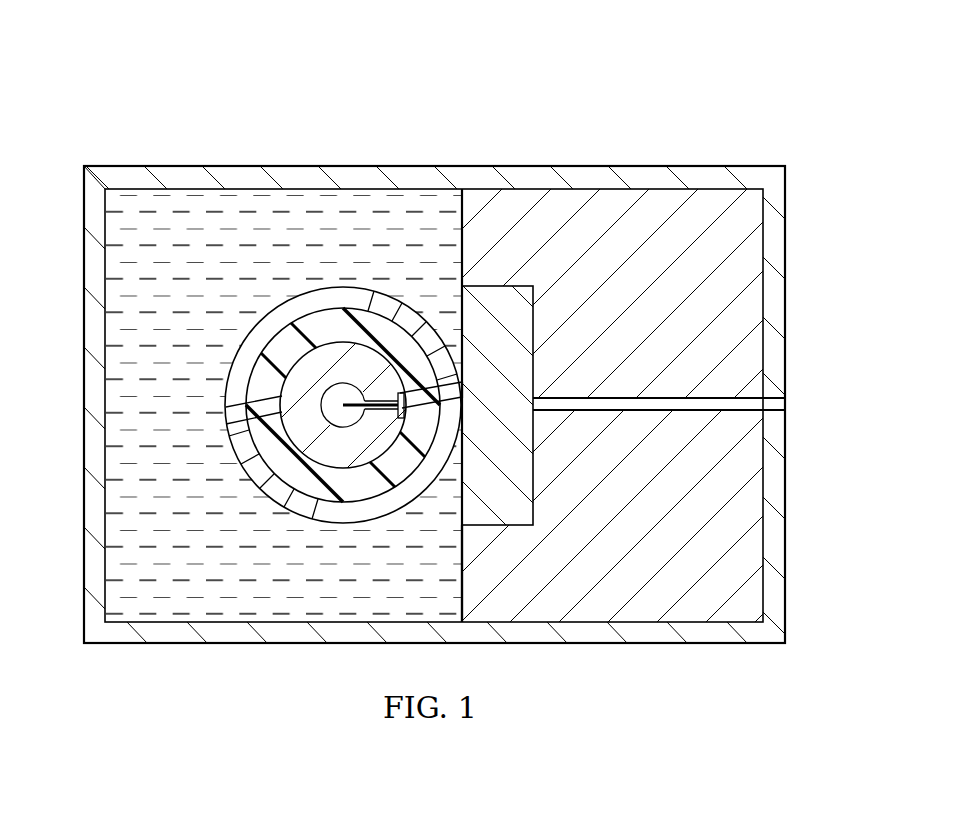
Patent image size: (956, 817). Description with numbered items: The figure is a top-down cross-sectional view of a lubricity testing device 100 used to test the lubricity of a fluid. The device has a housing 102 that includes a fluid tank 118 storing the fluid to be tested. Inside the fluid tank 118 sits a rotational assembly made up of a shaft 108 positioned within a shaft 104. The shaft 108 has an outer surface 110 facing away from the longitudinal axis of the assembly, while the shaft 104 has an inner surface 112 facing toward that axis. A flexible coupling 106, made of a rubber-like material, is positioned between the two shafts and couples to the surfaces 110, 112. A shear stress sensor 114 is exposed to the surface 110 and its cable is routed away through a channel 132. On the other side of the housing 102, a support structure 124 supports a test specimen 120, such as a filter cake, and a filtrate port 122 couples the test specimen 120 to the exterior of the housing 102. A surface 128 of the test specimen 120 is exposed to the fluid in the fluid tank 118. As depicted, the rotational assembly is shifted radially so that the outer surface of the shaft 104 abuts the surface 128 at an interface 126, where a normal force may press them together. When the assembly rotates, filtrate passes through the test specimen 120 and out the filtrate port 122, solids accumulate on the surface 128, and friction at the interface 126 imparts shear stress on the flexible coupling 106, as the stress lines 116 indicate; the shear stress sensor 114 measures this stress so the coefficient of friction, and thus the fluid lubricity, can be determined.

The lubricity testing device 100 is at (277, 70).
The housing 102 is at (537, 176).
The shaft 104 is at (345, 520).
The flexible coupling 106 is at (363, 310).
The shaft 108 is at (265, 343).
The outer surface 110 is at (233, 362).
The inner surface 112 is at (300, 488).
The shear stress sensor 114 is at (418, 340).
The stress lines 116 is at (248, 430).
The fluid tank 118 is at (244, 196).
The test specimen 120 is at (530, 478).
The filtrate port 122 is at (645, 398).
The support structure 124 is at (717, 195).
The interface 126 is at (468, 392).
The surface 128 is at (462, 520).
The channel 132 is at (345, 382).